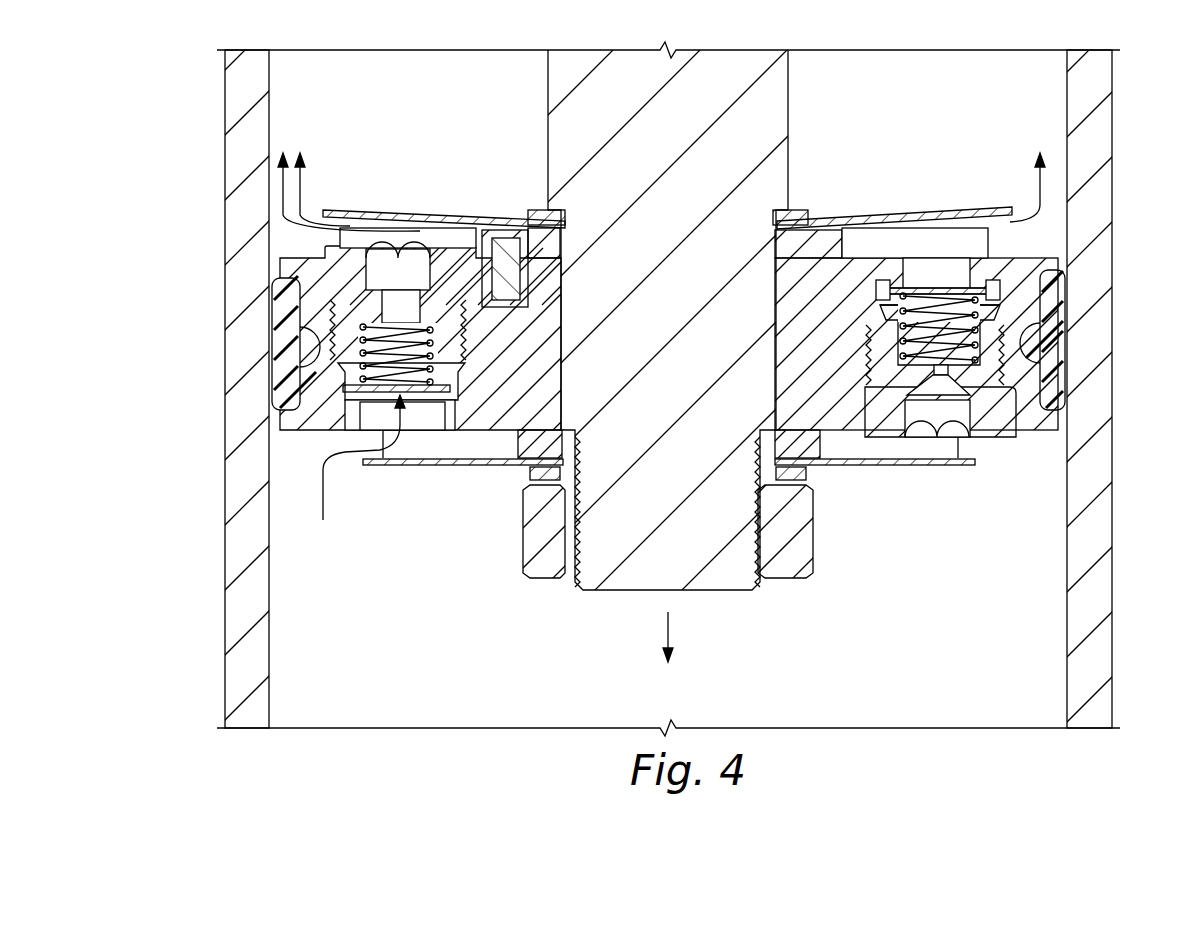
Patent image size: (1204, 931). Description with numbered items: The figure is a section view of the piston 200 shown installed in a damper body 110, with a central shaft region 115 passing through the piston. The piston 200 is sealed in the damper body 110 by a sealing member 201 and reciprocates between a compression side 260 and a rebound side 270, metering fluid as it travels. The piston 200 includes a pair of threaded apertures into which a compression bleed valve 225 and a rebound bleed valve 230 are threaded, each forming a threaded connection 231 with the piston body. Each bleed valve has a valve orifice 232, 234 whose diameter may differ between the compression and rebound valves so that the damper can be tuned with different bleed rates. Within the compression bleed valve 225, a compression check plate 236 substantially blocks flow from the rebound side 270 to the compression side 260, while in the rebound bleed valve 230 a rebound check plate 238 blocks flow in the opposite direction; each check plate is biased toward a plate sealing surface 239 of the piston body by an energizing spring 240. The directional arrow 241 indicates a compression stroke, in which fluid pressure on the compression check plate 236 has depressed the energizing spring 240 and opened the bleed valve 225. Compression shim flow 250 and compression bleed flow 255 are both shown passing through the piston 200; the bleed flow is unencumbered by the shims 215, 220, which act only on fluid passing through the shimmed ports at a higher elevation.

The damper body 110 is at (1112, 128).
The central shaft 115 is at (790, 88).
The piston 200 is at (272, 306).
The sealing member 201 is at (1040, 352).
The shim 215 is at (392, 216).
The shim 220 is at (424, 466).
The compression bleed valve 225 is at (333, 271).
The rebound bleed valve 230 is at (1005, 413).
The threaded connection 231 is at (340, 366).
The valve orifice 232 is at (313, 310).
The valve orifice 234 is at (940, 377).
The compression check plate 236 is at (337, 420).
The rebound check plate 238 is at (990, 292).
The plate sealing surface 239 is at (343, 392).
The energizing spring 240 is at (337, 348).
The directional arrow 241 is at (672, 625).
The compression shim flow 250 is at (303, 182).
The compression bleed flow 255 is at (323, 505).
The compression side 260 is at (925, 561).
The rebound side 270 is at (925, 141).